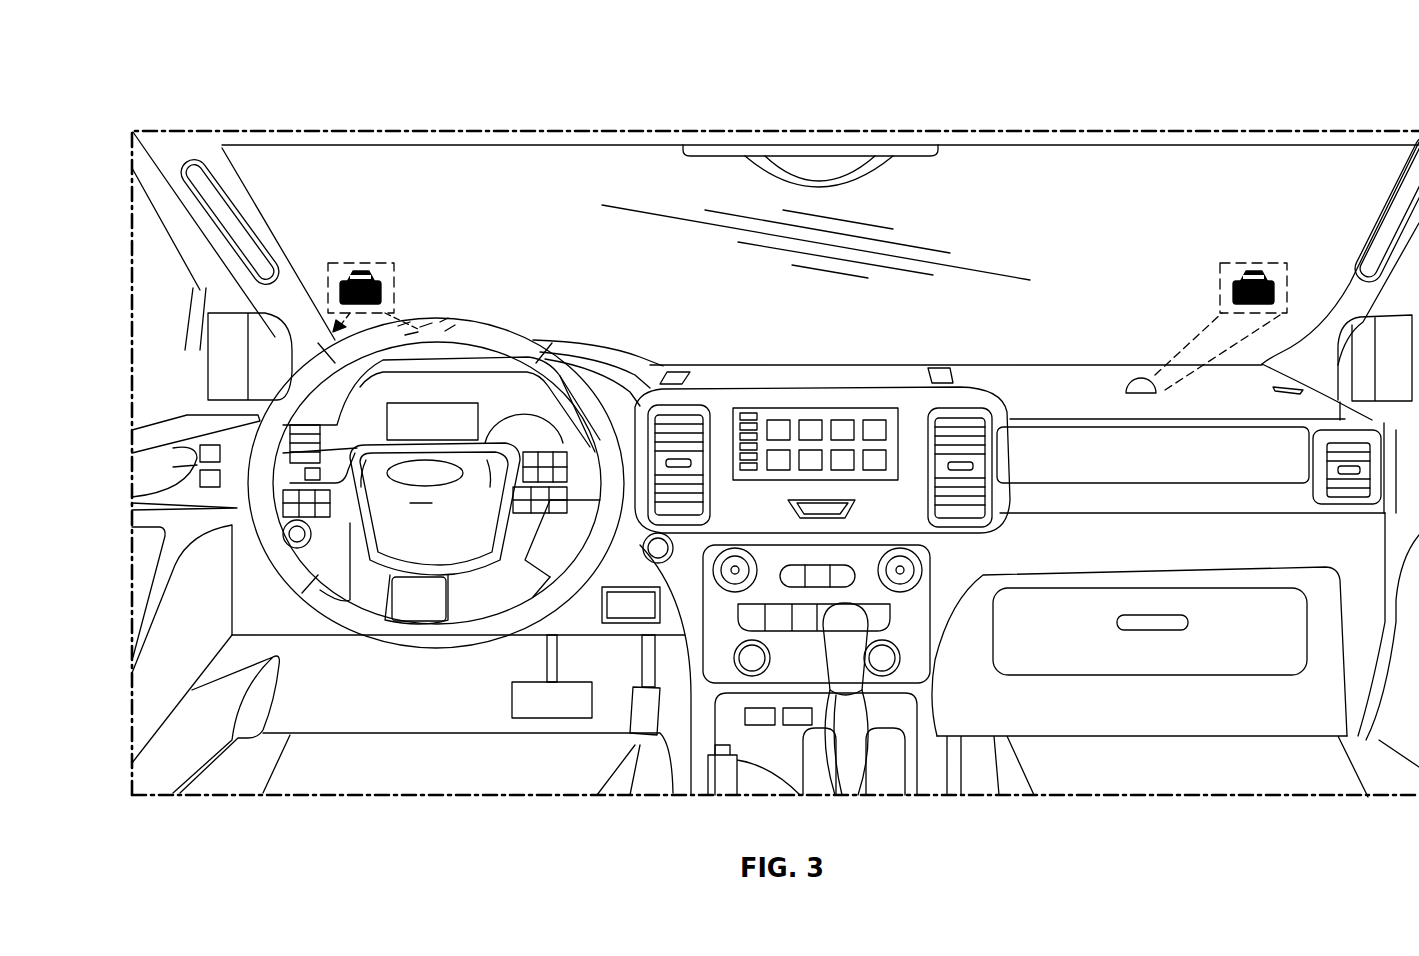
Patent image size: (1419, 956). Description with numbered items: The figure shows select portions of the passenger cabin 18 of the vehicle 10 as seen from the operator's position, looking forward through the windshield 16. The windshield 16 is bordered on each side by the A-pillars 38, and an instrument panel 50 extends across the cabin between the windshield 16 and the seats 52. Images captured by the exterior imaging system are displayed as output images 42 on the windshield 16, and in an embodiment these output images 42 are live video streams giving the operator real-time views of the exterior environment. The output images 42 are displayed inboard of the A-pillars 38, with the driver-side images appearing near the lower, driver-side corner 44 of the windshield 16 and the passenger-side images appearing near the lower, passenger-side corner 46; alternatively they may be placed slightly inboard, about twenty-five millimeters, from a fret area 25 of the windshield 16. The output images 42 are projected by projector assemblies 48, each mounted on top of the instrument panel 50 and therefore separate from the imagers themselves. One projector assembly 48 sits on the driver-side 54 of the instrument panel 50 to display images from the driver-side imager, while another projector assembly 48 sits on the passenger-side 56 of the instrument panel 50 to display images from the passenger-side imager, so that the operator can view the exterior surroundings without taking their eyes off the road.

The vehicle 10 is at (1285, 46).
The windshield 16 is at (1110, 170).
The passenger cabin 18 is at (668, 797).
The fret area 25 is at (237, 170).
The A-pillars 38 is at (283, 284).
The output images 42 is at (372, 263).
The lower, driver-side corner 44 is at (425, 318).
The lower, passenger-side corner 46 is at (1250, 345).
The projector assembly 48 is at (448, 326).
The instrument panel 50 is at (868, 377).
The seats 52 is at (425, 775).
The driver-side 54 is at (660, 344).
The passenger-side 56 is at (1086, 342).